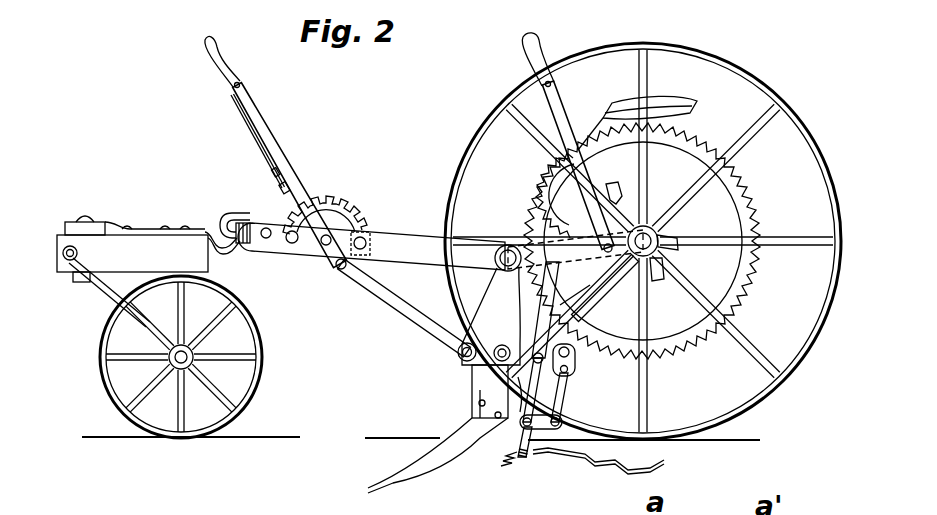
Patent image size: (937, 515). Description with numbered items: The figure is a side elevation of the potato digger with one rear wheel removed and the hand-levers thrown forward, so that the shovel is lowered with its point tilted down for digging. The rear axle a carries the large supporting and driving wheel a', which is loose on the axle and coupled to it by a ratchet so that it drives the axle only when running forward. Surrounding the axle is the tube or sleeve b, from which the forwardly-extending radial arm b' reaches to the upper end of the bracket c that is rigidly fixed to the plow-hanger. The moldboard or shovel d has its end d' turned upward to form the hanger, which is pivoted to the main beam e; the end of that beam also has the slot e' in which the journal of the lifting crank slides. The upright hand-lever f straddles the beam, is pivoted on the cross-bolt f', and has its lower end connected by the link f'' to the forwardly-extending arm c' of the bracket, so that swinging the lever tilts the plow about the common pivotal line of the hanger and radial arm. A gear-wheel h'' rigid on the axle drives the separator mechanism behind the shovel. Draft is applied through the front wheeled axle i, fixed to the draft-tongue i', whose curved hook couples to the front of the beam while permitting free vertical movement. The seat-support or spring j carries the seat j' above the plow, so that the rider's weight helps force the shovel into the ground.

The axle a is at (655, 208).
The supporting and driving wheel a' is at (643, 241).
The tube or sleeve b is at (642, 241).
The radial arm b' is at (522, 196).
The bracket c is at (491, 316).
The forwardly-extending arm c' is at (448, 351).
The moldboard or shovel d is at (438, 455).
The upturned end of moldboard d' is at (479, 391).
The main beam or frame e is at (371, 238).
The slot e' is at (540, 312).
The hand-lever f is at (276, 151).
The cross-bolt f' is at (312, 264).
The link f'' is at (397, 308).
The gear-wheel h'' is at (771, 193).
The front wheeled axle i is at (185, 357).
The draft-tongue i' is at (148, 255).
The seat-support or spring j is at (563, 172).
The seat j' is at (643, 114).